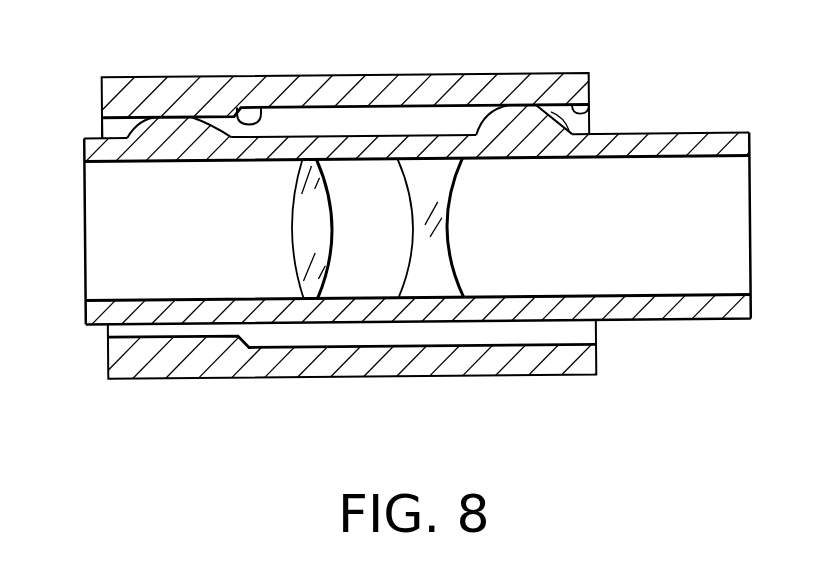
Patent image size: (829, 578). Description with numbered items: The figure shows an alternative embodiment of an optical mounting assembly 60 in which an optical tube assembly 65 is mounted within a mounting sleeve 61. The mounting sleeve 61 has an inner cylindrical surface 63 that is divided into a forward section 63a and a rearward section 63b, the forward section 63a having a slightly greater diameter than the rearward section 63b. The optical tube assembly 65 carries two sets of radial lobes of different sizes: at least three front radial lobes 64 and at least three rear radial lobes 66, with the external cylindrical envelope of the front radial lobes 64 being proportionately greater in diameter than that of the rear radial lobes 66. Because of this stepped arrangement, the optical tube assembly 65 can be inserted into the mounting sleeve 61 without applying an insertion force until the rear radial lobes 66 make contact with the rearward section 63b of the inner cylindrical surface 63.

The optical mounting assembly 60 is at (423, 235).
The mounting sleeve 61 is at (589, 74).
The inner cylindrical surface 63 is at (262, 108).
The forward section 63a is at (582, 113).
The rearward section 63b is at (105, 115).
The front radial lobes 64 is at (484, 125).
The optical tube assembly 65 is at (425, 197).
The rear radial lobes 66 is at (223, 114).